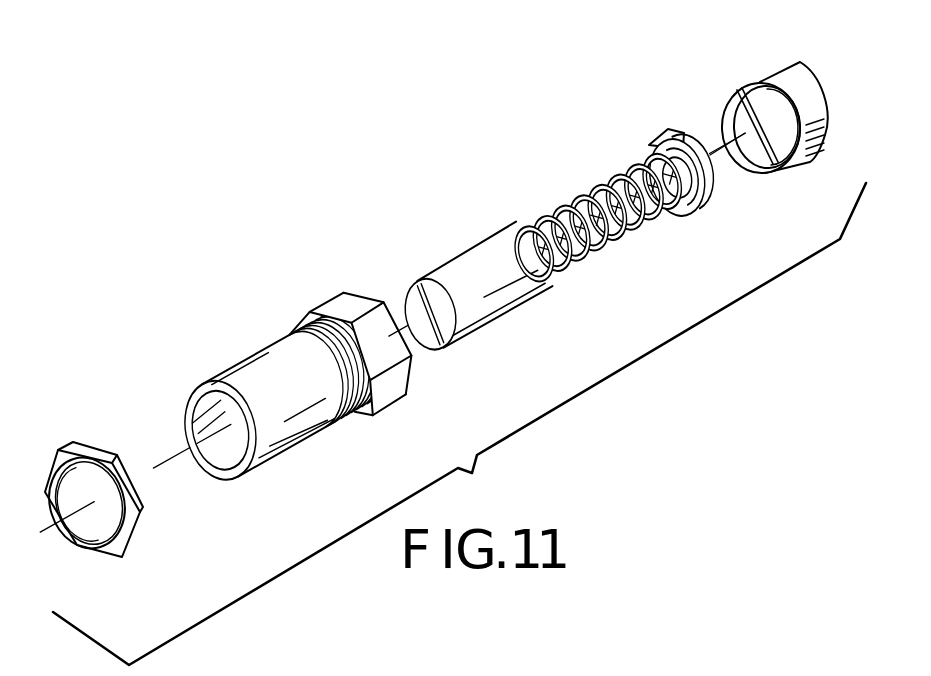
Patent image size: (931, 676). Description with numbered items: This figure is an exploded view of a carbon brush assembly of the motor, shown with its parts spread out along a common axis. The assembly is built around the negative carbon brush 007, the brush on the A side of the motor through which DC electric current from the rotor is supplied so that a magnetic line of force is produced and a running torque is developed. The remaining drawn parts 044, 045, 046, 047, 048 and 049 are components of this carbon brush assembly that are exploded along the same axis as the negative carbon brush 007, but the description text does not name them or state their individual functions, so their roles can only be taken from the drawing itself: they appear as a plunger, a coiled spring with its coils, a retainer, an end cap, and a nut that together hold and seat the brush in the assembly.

The negative carbon brush 007 is at (280, 332).
The plunger 044 is at (450, 279).
The compression spring 045 is at (540, 220).
The spring coil 046 is at (608, 178).
The retainer washer 047 is at (657, 142).
The end cap 048 is at (762, 70).
The lock nut 049 is at (143, 530).